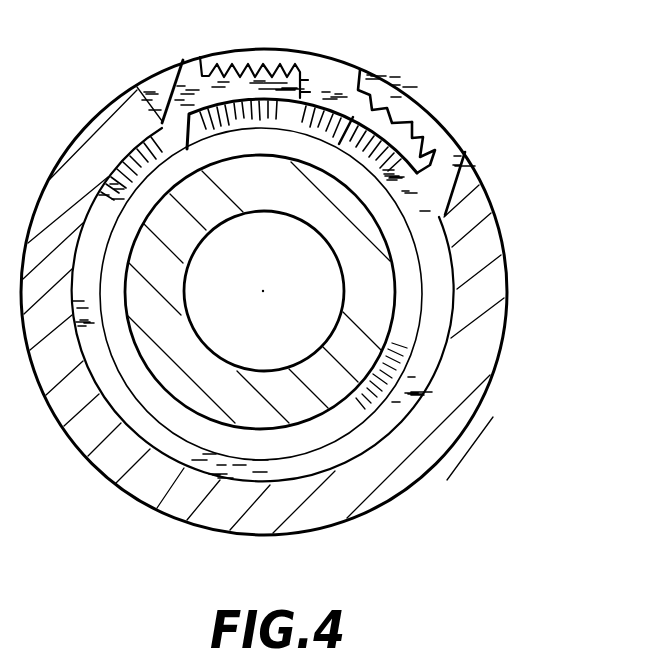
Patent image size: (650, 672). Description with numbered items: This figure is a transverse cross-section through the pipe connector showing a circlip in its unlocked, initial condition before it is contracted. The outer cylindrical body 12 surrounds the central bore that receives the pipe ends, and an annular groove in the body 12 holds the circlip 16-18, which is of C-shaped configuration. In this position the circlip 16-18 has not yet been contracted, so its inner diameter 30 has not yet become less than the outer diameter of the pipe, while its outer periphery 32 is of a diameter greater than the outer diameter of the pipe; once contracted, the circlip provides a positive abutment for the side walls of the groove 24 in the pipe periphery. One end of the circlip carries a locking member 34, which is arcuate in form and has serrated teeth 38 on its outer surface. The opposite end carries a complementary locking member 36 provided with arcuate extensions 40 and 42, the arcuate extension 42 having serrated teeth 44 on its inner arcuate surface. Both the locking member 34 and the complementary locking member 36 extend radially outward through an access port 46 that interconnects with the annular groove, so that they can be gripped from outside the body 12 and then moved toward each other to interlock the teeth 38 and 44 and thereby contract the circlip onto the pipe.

The cylindrical body 12 is at (403, 443).
The circlips 16-18 is at (437, 310).
The groove 24 is at (405, 351).
The inner diameter 30 is at (240, 459).
The outer periphery 32 is at (187, 473).
The locking member 34 is at (190, 78).
The complementary locking member 36 is at (449, 168).
The serrated teeth 38 is at (262, 68).
The arcuate extension 40 is at (373, 128).
The arcuate extension 42 is at (405, 92).
The serrated teeth 44 is at (410, 117).
The access port 46 is at (472, 163).